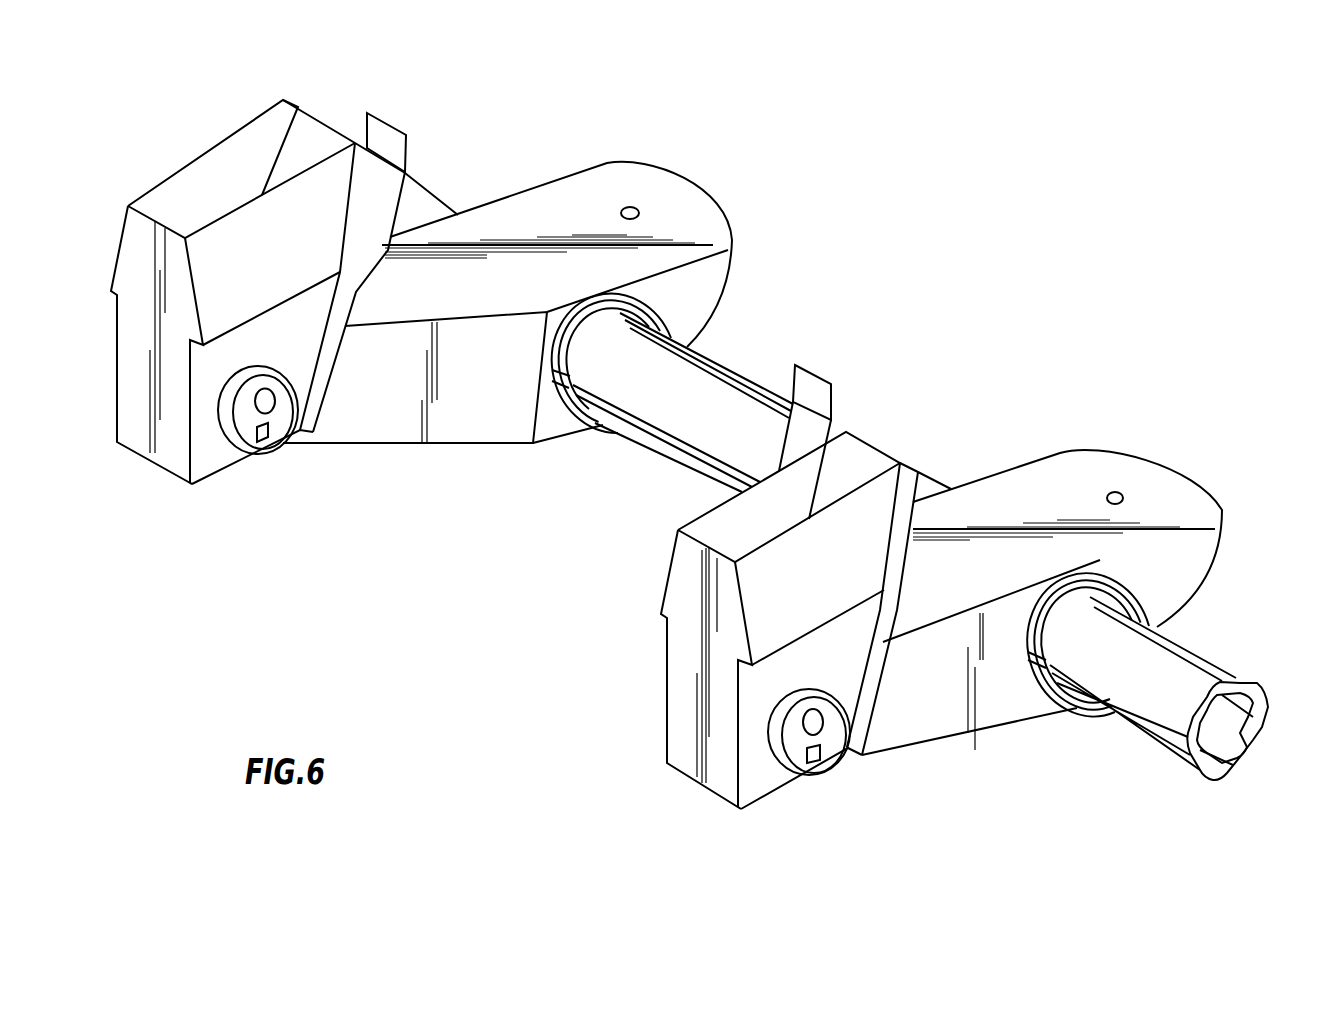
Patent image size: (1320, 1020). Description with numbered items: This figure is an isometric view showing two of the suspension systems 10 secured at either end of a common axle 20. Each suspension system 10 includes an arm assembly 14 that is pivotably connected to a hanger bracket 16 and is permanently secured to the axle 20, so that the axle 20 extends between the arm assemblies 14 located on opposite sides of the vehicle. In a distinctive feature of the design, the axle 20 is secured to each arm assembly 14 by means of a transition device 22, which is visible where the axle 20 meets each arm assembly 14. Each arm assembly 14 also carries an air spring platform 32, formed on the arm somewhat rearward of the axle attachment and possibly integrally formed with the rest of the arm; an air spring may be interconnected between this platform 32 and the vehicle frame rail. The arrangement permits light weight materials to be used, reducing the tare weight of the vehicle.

The suspension system 10 is at (556, 148).
The arm assembly 14 is at (412, 448).
The hanger bracket 16 is at (168, 472).
The axle 20 is at (733, 367).
The transition device 22 is at (553, 413).
The air spring platform 32 is at (713, 211).